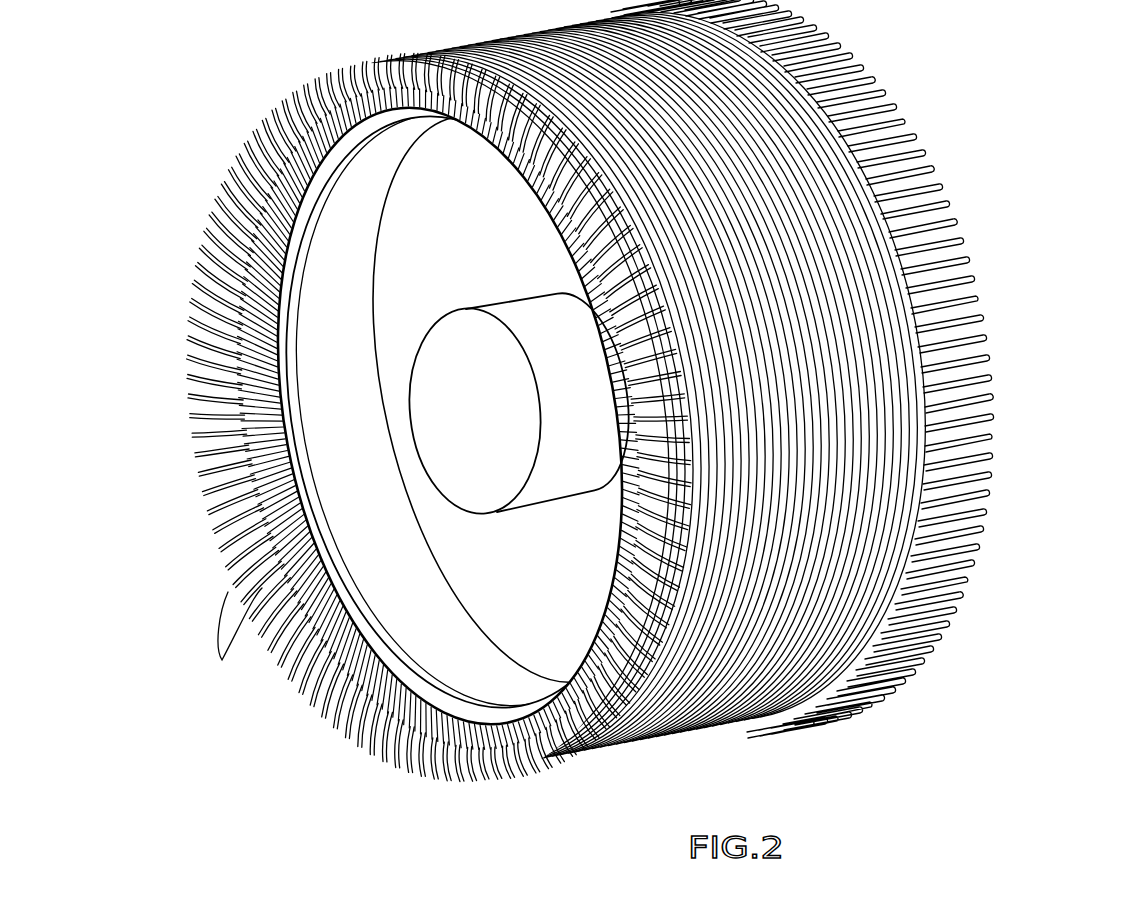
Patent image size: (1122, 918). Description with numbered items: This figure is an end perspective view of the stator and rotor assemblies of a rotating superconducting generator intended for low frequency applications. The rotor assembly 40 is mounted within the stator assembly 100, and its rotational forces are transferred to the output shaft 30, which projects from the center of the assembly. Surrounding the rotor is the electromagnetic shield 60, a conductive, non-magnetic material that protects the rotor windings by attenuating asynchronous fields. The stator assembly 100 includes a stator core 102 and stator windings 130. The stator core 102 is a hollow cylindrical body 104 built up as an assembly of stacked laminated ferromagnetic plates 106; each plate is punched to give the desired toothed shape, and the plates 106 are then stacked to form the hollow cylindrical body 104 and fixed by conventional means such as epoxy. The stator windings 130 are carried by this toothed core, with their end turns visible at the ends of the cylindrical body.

The stator assembly 100 is at (170, 256).
The output shaft 30 is at (492, 431).
The rotor assembly 40 is at (186, 331).
The electromagnetic shield 60 is at (193, 410).
The stator core 102 is at (830, 369).
The hollow cylindrical body 104 is at (797, 137).
The laminated ferromagnetic plates 106 is at (913, 418).
The stator windings 130 is at (222, 655).